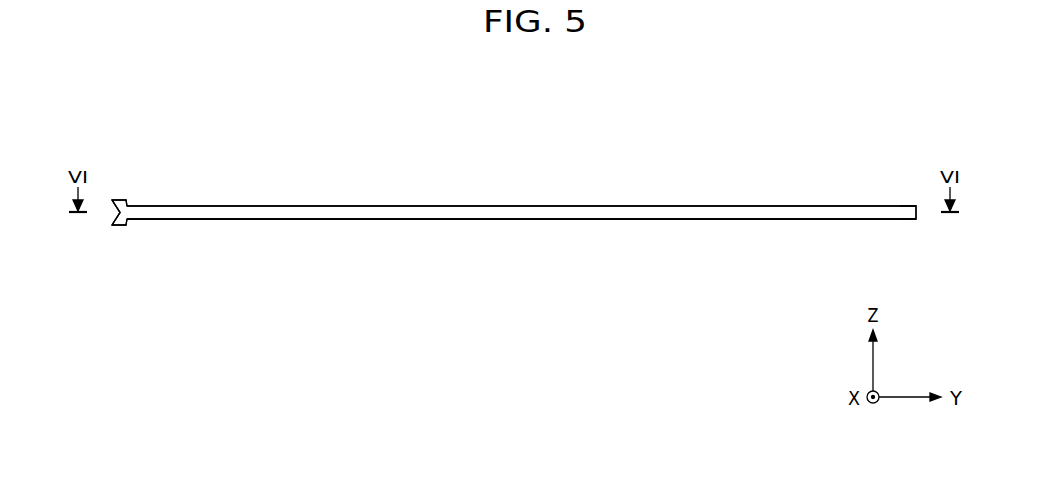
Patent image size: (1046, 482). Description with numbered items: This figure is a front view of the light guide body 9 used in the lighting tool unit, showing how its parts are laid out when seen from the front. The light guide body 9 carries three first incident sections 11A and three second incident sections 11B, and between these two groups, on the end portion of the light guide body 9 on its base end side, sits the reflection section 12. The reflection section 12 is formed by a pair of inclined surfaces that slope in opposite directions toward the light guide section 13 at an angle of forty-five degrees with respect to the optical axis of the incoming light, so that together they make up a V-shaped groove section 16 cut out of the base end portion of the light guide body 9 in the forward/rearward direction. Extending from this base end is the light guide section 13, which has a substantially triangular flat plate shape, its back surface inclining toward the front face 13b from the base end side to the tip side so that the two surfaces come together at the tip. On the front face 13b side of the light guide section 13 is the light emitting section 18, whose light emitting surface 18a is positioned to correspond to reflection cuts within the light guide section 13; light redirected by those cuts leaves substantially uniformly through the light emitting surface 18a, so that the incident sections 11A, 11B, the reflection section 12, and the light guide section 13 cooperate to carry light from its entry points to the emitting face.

The light guide body 9 is at (214, 176).
The first incident sections 11A is at (118, 203).
The second incident sections 11B is at (118, 223).
The reflection section 12 is at (123, 279).
The light guide section 13 is at (505, 207).
The front face 13b is at (808, 215).
The V-shaped groove section 16 is at (113, 212).
The light emitting section 18 is at (521, 263).
The light emitting surface 18a is at (515, 219).